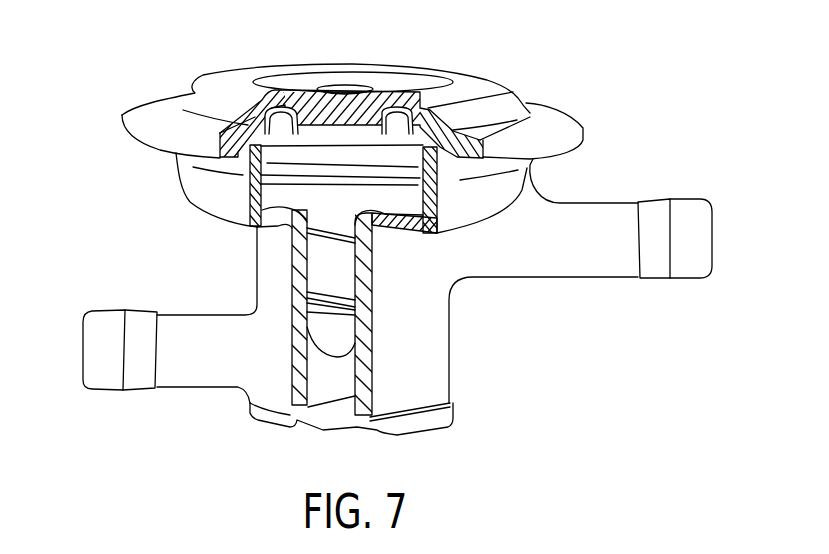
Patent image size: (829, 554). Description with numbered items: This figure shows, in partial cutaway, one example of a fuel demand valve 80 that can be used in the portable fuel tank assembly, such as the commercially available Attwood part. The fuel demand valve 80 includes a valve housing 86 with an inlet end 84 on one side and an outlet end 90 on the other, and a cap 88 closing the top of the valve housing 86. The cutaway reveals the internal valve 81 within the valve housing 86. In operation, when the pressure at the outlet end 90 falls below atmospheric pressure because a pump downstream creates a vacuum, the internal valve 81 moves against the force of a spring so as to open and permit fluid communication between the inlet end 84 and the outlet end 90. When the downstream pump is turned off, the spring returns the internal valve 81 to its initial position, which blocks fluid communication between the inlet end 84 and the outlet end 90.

The fuel demand valve 80 is at (178, 53).
The internal valve 81 is at (343, 220).
The inlet end 84 is at (76, 352).
The valve housing 86 is at (417, 345).
The cap 88 is at (470, 95).
The outlet end 90 is at (723, 240).